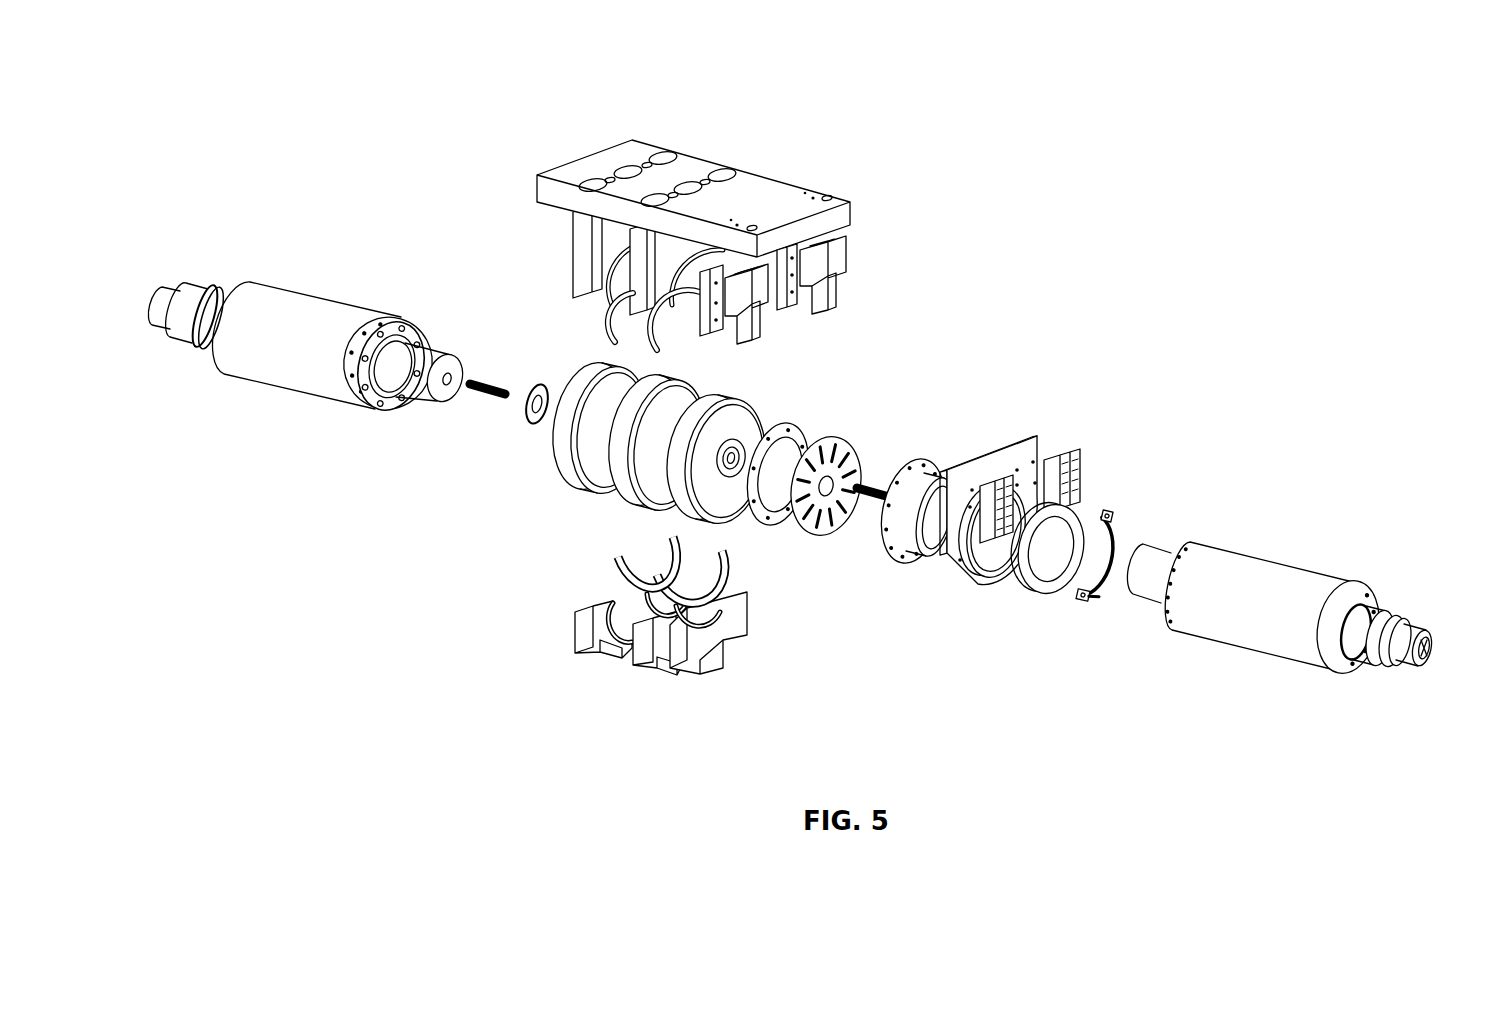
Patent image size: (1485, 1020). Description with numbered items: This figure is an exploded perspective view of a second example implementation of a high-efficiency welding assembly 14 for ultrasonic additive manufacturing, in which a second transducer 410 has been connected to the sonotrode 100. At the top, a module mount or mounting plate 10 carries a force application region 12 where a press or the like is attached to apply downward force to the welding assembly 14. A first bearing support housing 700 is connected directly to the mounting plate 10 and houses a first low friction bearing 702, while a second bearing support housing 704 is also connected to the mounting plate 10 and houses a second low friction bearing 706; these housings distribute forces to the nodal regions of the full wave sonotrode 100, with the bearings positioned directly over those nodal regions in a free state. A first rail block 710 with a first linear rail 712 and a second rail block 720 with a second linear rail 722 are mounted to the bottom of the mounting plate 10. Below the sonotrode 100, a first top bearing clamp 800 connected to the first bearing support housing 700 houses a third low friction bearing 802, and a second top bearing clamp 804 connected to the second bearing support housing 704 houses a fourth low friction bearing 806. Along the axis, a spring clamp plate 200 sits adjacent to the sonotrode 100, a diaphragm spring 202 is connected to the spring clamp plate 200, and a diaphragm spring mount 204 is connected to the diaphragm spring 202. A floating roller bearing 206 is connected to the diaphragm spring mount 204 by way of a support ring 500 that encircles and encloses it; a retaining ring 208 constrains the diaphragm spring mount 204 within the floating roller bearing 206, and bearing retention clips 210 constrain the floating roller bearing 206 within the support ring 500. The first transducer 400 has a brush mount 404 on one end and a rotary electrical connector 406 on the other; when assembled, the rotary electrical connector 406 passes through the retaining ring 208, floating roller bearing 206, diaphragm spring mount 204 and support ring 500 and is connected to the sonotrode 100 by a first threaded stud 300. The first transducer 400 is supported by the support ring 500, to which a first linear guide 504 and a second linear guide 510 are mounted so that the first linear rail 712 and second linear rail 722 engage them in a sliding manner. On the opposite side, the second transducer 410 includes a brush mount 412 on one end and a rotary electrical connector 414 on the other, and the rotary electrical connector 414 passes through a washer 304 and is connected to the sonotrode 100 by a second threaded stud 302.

The mounting plate 10 is at (640, 102).
The force application region 12 is at (697, 152).
The welding assembly 14 is at (1162, 335).
The full wave sonotrode 100 is at (558, 496).
The spring clamp plate 200 is at (783, 530).
The diaphragm spring 202 is at (842, 446).
The diaphragm spring mount 204 is at (905, 562).
The floating roller bearing 206 is at (1045, 583).
The retaining ring 208 is at (1130, 545).
The bearing retention clips 210 is at (1112, 510).
The first threaded stud 300 is at (876, 470).
The second threaded stud 302 is at (498, 380).
The washer 304 is at (527, 426).
The first transducer 400 is at (1275, 565).
The brush mount 404 is at (1365, 675).
The rotary electrical connector 406 is at (1145, 605).
The second transducer 410 is at (330, 293).
The brush mount 412 is at (214, 280).
The rotary electrical connector 414 is at (445, 350).
The support ring 500 is at (990, 440).
The first linear guide 504 is at (975, 497).
The second linear guide 510 is at (1070, 450).
The first bearing support housing 700 is at (575, 245).
The first low friction bearing 702 is at (610, 330).
The second bearing support housing 704 is at (676, 247).
The second low friction bearing 706 is at (690, 326).
The first rail block 710 is at (785, 303).
The first linear rail 712 is at (745, 323).
The second rail block 720 is at (840, 248).
The second linear rail 722 is at (845, 288).
The first top bearing clamp 800 is at (585, 653).
The third low friction bearing 802 is at (615, 563).
The second top bearing clamp 804 is at (690, 668).
The fourth low friction bearing 806 is at (740, 574).